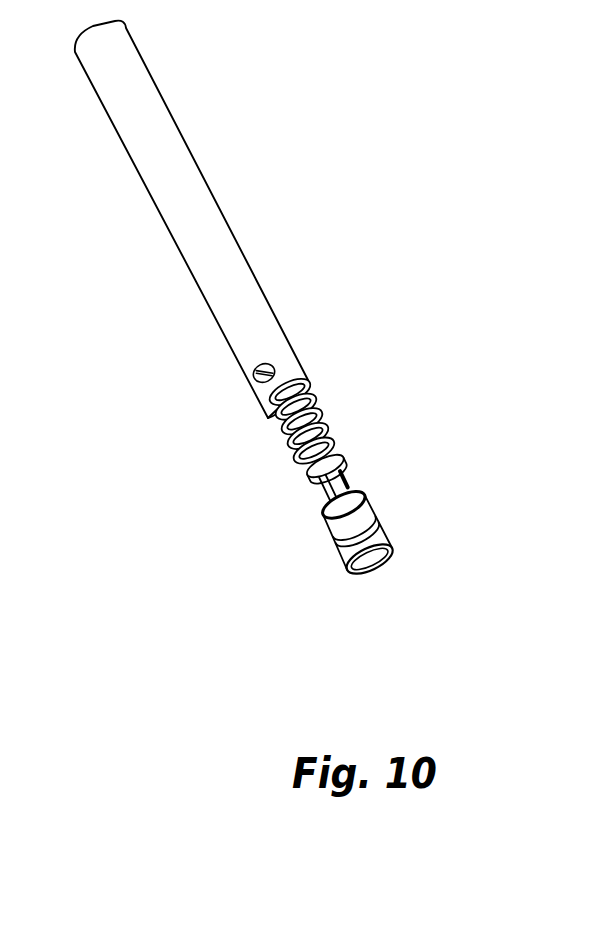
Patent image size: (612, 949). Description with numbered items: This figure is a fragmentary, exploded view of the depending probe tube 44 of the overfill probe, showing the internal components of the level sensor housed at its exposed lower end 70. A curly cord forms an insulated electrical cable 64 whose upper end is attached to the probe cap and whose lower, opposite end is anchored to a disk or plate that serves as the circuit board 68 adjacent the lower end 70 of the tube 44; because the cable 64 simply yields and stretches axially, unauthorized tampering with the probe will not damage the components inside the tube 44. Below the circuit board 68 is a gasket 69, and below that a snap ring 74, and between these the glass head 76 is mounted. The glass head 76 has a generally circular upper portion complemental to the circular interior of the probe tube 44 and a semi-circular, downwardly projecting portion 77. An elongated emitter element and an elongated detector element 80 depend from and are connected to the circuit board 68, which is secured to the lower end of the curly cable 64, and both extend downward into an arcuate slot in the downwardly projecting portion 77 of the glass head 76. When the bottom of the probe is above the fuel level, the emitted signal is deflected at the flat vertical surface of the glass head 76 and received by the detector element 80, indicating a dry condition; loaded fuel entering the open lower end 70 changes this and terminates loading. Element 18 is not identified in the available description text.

The probe tube 44 is at (187, 138).
The insulated electrical cable 64 is at (275, 434).
The lower end of probe tube 70 is at (318, 385).
The circuit board 68 is at (308, 484).
The stem 18 is at (323, 503).
The detector element 80 is at (352, 475).
The gasket 69 is at (365, 497).
The downwardly projecting portion 77 is at (383, 530).
The snap ring 74 is at (386, 570).
The glass head 76 is at (352, 524).